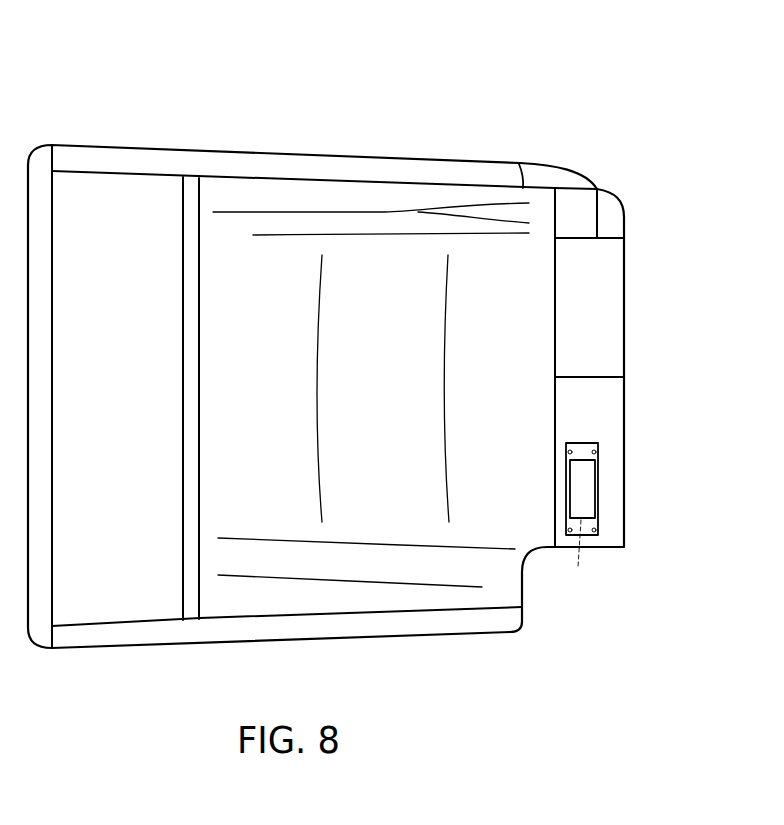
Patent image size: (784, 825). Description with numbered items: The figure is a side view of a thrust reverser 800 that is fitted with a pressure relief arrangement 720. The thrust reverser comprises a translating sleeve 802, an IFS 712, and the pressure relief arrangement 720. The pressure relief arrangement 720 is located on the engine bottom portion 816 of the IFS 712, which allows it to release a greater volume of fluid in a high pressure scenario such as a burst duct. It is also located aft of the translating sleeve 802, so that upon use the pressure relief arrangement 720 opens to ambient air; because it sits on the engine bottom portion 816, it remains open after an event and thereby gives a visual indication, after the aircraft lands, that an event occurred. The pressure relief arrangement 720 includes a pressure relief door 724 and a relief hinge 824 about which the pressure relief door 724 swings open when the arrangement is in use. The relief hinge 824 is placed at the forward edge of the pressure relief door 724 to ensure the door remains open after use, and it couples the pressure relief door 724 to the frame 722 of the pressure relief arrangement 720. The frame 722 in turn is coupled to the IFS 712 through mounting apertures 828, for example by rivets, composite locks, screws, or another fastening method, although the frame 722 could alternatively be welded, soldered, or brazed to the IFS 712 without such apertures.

The wearable apparatus 800 is at (133, 72).
The translating sleeve 802 is at (505, 332).
The IFS 712 is at (600, 358).
The engine bottom portion 816 is at (607, 430).
The pressure relief door 724 is at (585, 490).
The relief hinge 824 is at (570, 490).
The mounting apertures 828 is at (567, 533).
The frame 722 is at (604, 527).
The pressure relief arrangement 720 is at (580, 520).